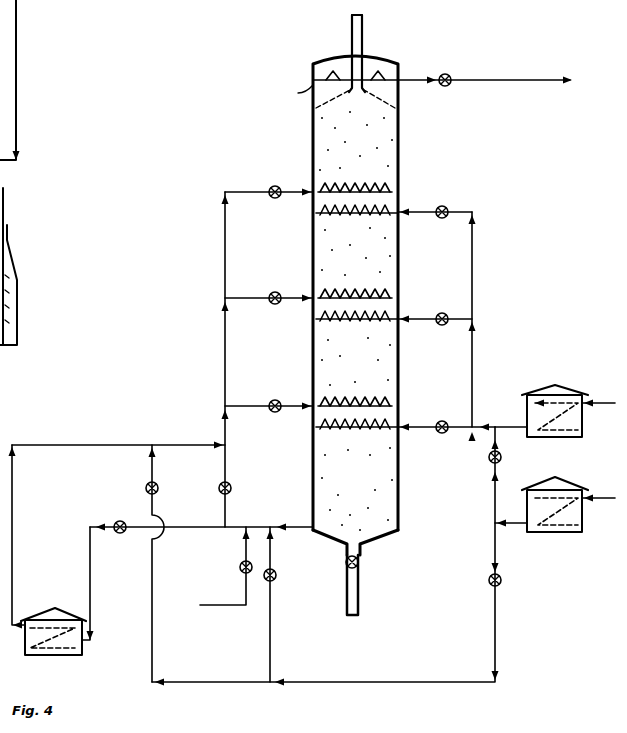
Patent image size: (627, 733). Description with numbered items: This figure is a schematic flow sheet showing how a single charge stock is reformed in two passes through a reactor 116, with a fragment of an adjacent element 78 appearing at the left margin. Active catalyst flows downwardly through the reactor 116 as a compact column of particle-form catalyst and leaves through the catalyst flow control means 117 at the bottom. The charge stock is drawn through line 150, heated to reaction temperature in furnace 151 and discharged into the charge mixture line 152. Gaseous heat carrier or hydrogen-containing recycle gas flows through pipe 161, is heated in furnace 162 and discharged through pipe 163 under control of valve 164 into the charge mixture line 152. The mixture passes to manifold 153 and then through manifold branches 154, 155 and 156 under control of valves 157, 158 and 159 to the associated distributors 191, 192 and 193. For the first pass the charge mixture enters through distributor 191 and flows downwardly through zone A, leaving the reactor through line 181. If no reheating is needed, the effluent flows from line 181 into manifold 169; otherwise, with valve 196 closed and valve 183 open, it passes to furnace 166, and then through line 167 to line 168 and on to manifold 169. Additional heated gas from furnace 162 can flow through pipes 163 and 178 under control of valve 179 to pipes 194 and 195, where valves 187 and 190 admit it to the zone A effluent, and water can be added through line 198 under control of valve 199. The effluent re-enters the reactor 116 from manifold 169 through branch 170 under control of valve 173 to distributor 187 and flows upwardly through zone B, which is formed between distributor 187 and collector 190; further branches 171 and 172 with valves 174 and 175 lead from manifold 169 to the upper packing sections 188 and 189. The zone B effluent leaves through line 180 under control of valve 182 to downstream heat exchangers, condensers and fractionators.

The line 78 is at (5, 368).
The reactor 116 is at (398, 148).
The catalyst flow control means 117 is at (359, 562).
The line 150 is at (598, 381).
The furnace 151 is at (540, 445).
The charge mixture line 152 is at (518, 420).
The manifold 153 is at (472, 355).
The manifold branch 154 is at (462, 428).
The manifold branch 155 is at (462, 322).
The manifold branch 156 is at (458, 212).
The valve 157 is at (440, 420).
The valve 158 is at (440, 312).
The valve 159 is at (447, 205).
The pipe 161 is at (598, 470).
The furnace 162 is at (545, 540).
The pipe 163 is at (505, 540).
The valve 164 is at (488, 459).
The furnace 166 is at (40, 660).
The line 167 is at (12, 550).
The line 168 is at (101, 439).
The manifold 169 is at (225, 352).
The branch 170 is at (255, 399).
The line 171 is at (255, 292).
The line 172 is at (252, 185).
The valve 173 is at (270, 414).
The valve 174 is at (270, 306).
The valve 175 is at (270, 200).
The pipe 178 is at (221, 675).
The valve 179 is at (488, 580).
The line 180 is at (408, 80).
The line 181 is at (305, 519).
The valve 182 is at (445, 88).
The valve 183 is at (123, 513).
The distributor 187 is at (378, 397).
The packing section 188 is at (376, 288).
The packing section 189 is at (383, 182).
The collector 190 is at (291, 92).
The distributor 191 is at (322, 431).
The distributor 192 is at (322, 322).
The distributor 193 is at (322, 216).
The pipe 194 is at (270, 627).
The pipe 195 is at (152, 640).
The valve 196 is at (232, 488).
The line 198 is at (221, 599).
The valve 199 is at (240, 567).